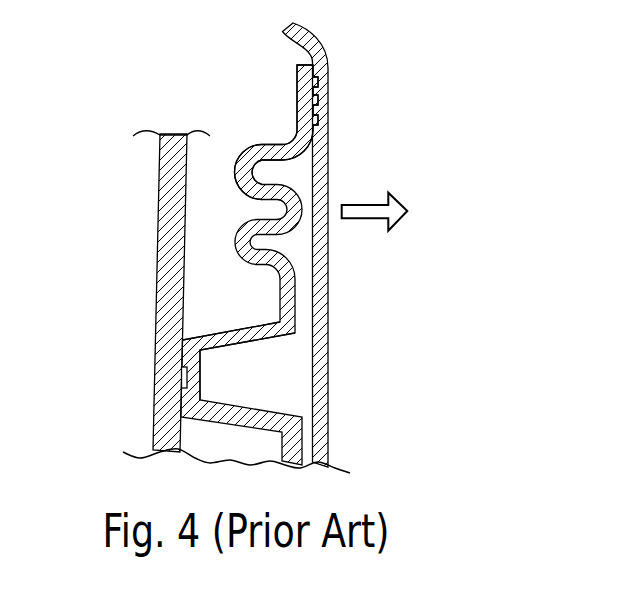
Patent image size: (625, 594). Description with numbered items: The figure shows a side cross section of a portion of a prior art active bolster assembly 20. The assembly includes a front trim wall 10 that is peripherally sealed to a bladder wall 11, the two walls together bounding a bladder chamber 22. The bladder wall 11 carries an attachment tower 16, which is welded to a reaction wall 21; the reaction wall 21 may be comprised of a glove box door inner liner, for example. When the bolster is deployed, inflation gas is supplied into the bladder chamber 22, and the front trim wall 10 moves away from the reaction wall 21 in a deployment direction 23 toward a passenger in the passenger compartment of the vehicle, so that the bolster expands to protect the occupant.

The front trim wall 10 is at (329, 143).
The bladder wall 11 is at (266, 148).
The attachment tower 16 is at (227, 325).
The active bolster assembly 20 is at (216, 69).
The reaction wall 21 is at (158, 238).
The bladder chamber 22 is at (293, 255).
The deployment direction 23 is at (366, 203).